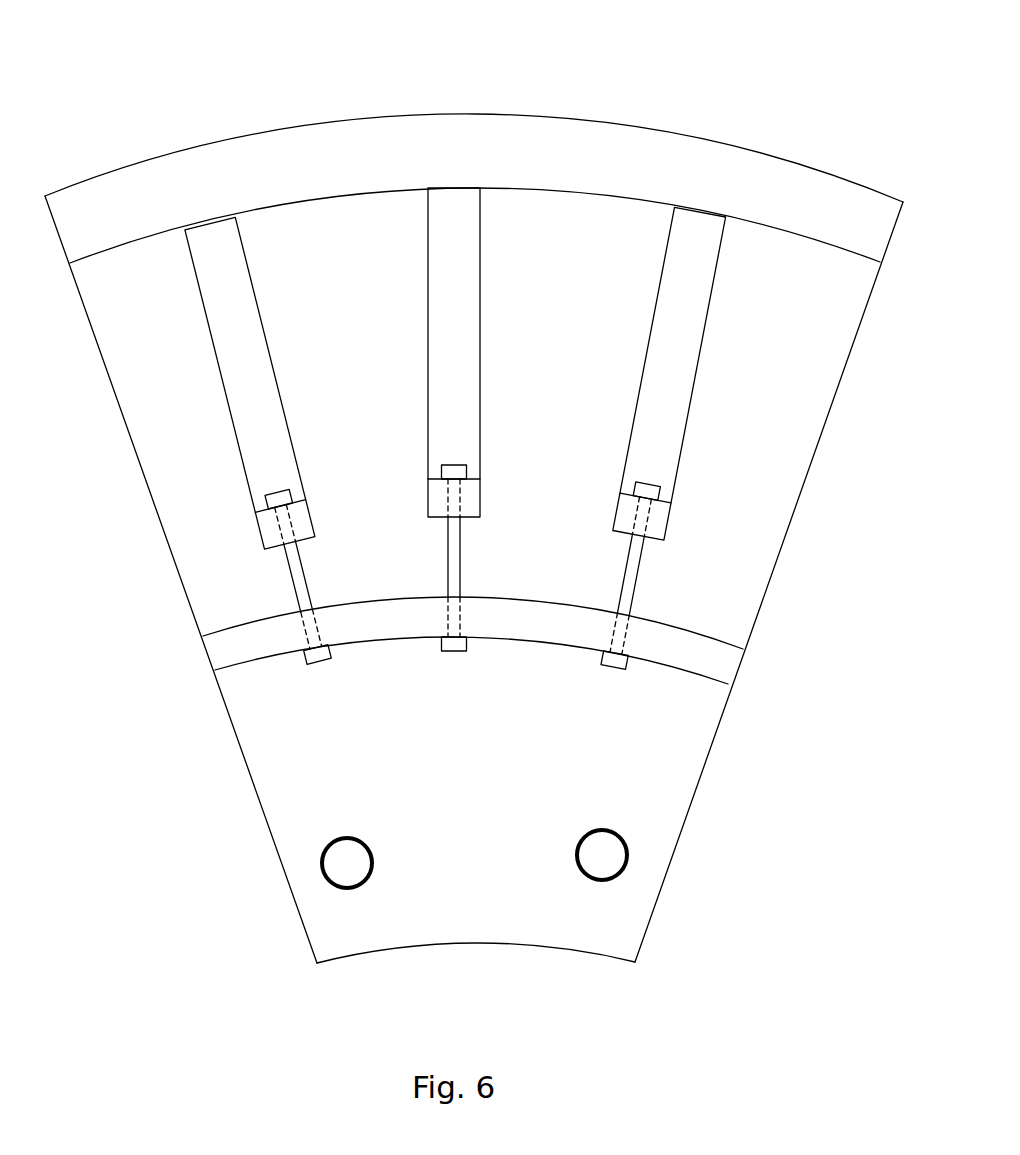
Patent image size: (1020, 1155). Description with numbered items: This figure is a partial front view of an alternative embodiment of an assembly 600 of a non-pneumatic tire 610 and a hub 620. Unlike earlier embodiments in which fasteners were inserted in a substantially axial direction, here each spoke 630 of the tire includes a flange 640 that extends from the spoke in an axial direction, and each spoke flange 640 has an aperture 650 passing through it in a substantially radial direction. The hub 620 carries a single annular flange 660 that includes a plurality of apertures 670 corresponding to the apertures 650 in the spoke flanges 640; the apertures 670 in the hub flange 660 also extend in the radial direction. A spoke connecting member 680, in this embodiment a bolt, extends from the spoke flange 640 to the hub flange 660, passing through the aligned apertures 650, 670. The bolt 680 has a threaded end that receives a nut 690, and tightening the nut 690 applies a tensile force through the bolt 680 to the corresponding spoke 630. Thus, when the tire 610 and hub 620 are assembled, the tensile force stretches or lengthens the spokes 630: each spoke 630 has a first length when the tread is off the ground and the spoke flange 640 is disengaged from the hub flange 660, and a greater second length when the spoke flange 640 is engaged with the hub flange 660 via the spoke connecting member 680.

The assembly 600 is at (756, 95).
The non-pneumatic tire 610 is at (499, 184).
The hub 620 is at (573, 830).
The spoke 630 is at (455, 368).
The flange 640 is at (463, 459).
The aperture 650 is at (462, 461).
The flange 660 is at (546, 638).
The apertures 670 is at (451, 612).
The spoke connecting member 680 is at (445, 557).
The nut 690 is at (466, 687).